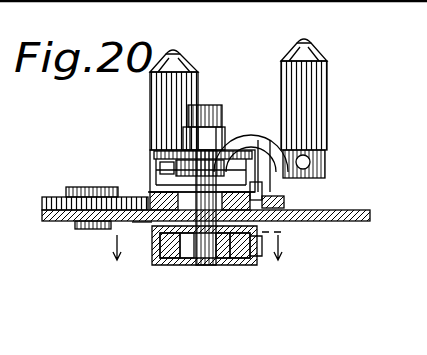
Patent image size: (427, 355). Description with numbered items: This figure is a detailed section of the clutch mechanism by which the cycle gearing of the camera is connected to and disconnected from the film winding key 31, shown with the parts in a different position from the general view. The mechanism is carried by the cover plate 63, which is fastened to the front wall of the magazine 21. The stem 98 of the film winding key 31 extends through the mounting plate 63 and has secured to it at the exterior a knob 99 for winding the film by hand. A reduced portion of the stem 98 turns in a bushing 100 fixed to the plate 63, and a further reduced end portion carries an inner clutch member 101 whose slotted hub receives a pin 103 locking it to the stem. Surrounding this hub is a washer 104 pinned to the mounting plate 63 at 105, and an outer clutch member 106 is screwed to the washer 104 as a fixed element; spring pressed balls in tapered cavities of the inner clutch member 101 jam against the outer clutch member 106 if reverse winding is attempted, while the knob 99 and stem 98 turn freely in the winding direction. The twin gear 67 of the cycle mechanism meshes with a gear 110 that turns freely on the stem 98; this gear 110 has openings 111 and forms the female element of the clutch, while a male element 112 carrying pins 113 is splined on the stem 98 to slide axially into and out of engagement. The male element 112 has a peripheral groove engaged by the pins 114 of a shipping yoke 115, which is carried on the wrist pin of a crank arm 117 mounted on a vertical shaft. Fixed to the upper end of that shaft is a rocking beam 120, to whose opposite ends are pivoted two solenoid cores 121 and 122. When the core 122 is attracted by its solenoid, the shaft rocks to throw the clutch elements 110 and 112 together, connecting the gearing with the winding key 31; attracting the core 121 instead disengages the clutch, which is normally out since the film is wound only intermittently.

The magazine 21 is at (198, 243).
The film winding key 31 is at (212, 108).
The cover plate 63 is at (370, 214).
The twin gear 67 is at (58, 198).
The stem 98 is at (212, 266).
The knob 99 is at (256, 250).
The bushing 100 is at (166, 266).
The inner clutch member 101 is at (186, 266).
The pin 103 is at (176, 267).
The washer 104 is at (152, 250).
The pin 105 is at (286, 203).
The outer clutch member 106 is at (240, 267).
The gear 110 is at (160, 178).
The openings 111 is at (134, 230).
The male element 112 is at (172, 152).
The pins 113 is at (264, 189).
The pins 114 is at (155, 165).
The shipping yoke 115 is at (165, 158).
The crank arm 117 is at (262, 150).
The rocking beam 120 is at (264, 126).
The solenoid core 121 is at (180, 63).
The solenoid core 122 is at (327, 74).